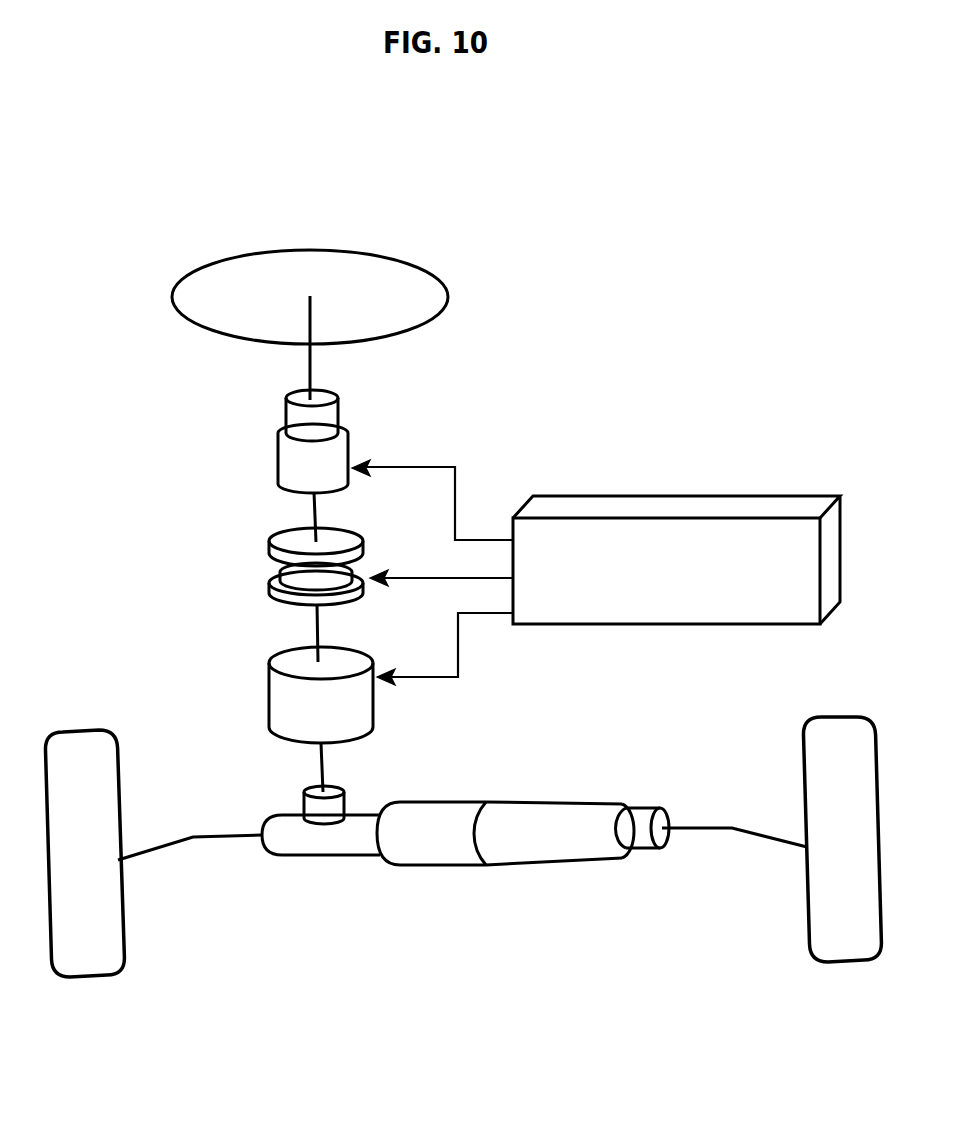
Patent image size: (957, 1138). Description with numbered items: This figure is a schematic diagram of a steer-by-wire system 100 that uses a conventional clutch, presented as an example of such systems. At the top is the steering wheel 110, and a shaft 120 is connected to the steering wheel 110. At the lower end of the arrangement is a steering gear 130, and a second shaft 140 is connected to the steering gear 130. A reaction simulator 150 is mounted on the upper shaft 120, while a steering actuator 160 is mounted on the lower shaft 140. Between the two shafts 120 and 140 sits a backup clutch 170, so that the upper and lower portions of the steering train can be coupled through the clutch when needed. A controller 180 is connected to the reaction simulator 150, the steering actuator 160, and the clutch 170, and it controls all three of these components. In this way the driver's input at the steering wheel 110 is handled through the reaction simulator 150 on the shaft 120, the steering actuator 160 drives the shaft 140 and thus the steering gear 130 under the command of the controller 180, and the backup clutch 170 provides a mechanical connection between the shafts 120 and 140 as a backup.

The steer-by-wire system 100 is at (548, 367).
The steering wheel 110 is at (384, 256).
The shaft 120 is at (307, 366).
The steering gear 130 is at (322, 855).
The shaft 140 is at (322, 765).
The reaction simulator 150 is at (278, 458).
The steering actuator 160 is at (270, 700).
The backup clutch 170 is at (282, 570).
The controller 180 is at (688, 505).